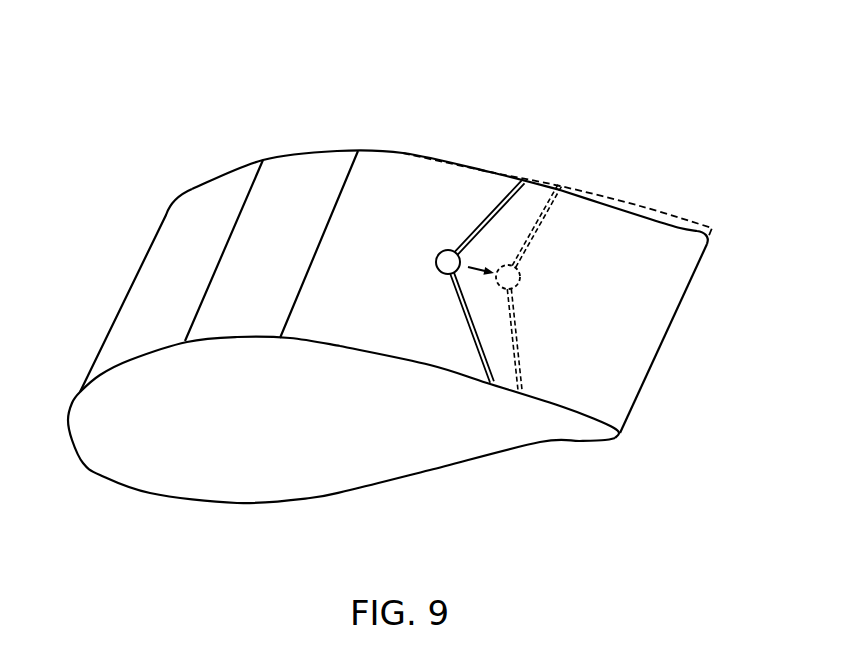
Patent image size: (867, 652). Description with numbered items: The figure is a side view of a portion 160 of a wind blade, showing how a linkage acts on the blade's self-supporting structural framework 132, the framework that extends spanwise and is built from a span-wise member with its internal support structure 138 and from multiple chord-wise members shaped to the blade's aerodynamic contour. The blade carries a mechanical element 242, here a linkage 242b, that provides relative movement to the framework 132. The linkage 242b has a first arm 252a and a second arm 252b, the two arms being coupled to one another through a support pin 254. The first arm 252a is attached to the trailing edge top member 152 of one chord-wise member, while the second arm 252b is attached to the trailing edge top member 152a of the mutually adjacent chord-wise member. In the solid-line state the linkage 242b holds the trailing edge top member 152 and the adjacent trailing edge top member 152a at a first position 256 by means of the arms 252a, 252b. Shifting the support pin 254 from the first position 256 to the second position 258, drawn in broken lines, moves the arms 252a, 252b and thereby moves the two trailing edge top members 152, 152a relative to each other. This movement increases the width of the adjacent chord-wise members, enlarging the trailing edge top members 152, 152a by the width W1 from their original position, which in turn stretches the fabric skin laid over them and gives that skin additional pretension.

The portion of the wind blade 160 is at (699, 76).
The internal support structure 138 is at (305, 158).
The self-supporting structural framework 132 is at (486, 480).
The trailing edge top member 152 is at (565, 407).
The trailing edge top member 152a is at (632, 216).
The mechanical element 242 is at (427, 252).
The linkage 242b is at (443, 272).
The support pin 254 is at (447, 260).
The first arm 252a is at (500, 200).
The second arm 252b is at (467, 330).
The first position 256 is at (526, 182).
The second position 258 is at (557, 182).
The width W1 is at (677, 237).